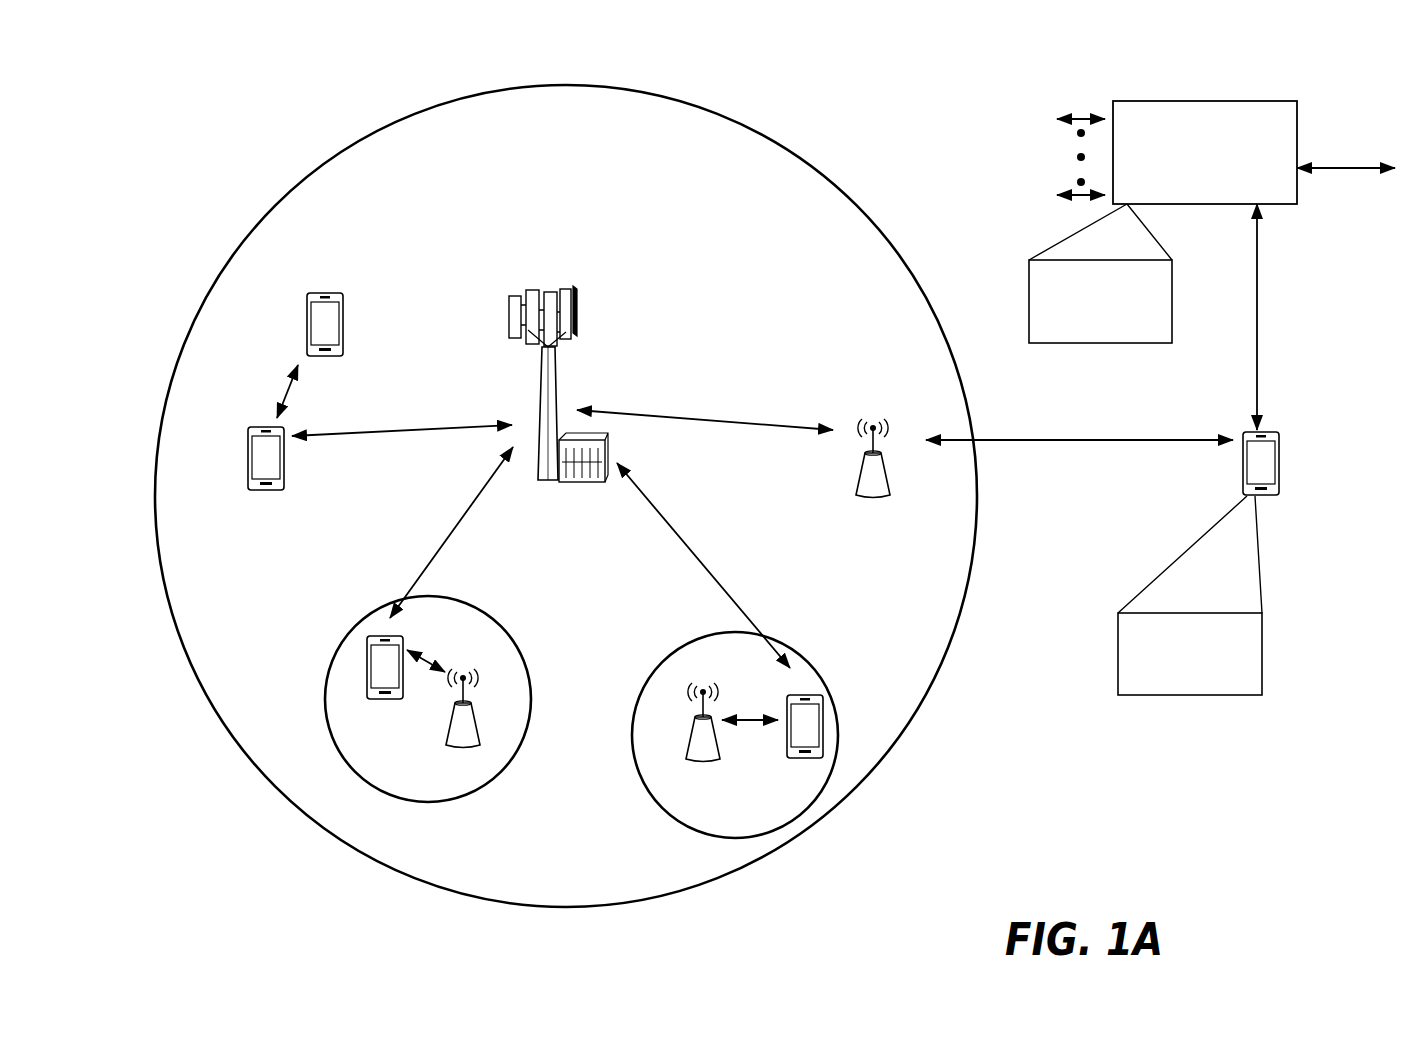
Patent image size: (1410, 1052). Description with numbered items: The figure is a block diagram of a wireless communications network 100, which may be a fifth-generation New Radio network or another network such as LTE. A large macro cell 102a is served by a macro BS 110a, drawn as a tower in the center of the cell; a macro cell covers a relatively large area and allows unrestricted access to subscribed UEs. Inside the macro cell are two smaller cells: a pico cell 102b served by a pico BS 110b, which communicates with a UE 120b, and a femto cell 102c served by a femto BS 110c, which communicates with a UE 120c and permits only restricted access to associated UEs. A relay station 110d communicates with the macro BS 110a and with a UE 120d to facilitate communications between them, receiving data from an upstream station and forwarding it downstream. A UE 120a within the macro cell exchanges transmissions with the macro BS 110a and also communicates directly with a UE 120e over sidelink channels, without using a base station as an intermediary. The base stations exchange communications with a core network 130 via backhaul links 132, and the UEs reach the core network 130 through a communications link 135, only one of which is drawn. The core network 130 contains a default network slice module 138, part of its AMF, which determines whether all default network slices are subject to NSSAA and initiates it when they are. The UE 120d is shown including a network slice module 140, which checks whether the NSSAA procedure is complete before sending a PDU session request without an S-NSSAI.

The wireless communications network 100 is at (182, 80).
The macro cell 102a is at (838, 189).
The pico cell 102b is at (521, 634).
The femto cell 102c is at (672, 641).
The macro BS 110a is at (553, 277).
The pico BS 110b is at (482, 725).
The femto BS 110c is at (690, 742).
The relay station 110d is at (873, 420).
The UE 120a is at (248, 450).
The UE 120b is at (371, 700).
The UE 120c is at (788, 760).
The UE 120d is at (1272, 497).
The UE 120e is at (306, 312).
The core network 130 is at (1179, 101).
The backhaul links 132 is at (1081, 118).
The communications link 135 is at (1257, 328).
The default network slice module 138 is at (1172, 343).
The network slice module 140 is at (1190, 695).